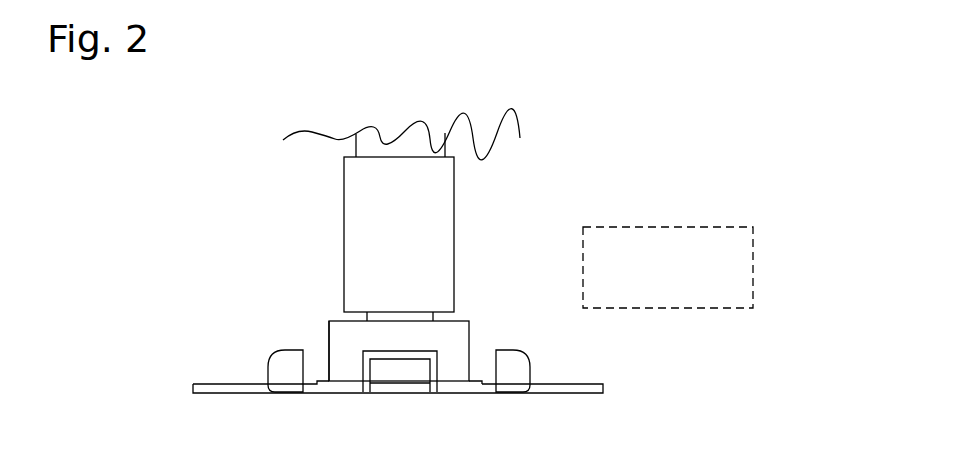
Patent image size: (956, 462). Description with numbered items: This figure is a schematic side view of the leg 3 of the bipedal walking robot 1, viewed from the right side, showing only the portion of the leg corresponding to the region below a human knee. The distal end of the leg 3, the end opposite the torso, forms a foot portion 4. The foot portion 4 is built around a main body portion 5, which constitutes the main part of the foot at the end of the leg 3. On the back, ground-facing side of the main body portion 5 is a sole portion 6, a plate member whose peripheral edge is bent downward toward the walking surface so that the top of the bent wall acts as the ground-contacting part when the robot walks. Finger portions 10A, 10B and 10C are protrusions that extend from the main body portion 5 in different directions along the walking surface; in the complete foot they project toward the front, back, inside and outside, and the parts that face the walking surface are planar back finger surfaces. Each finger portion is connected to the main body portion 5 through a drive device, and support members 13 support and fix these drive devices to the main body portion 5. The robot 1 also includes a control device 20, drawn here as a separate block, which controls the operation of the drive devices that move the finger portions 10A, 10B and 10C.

The bipedal walking robot 1 is at (620, 177).
The leg 3 is at (460, 216).
The foot portion 4 is at (471, 330).
The main body portion 5 is at (328, 345).
The sole portion 6 is at (462, 387).
The finger portion 10A is at (210, 383).
The finger portion 10B is at (400, 391).
The finger portion 10C is at (588, 382).
The support member 13 is at (320, 398).
The control device 20 is at (725, 224).